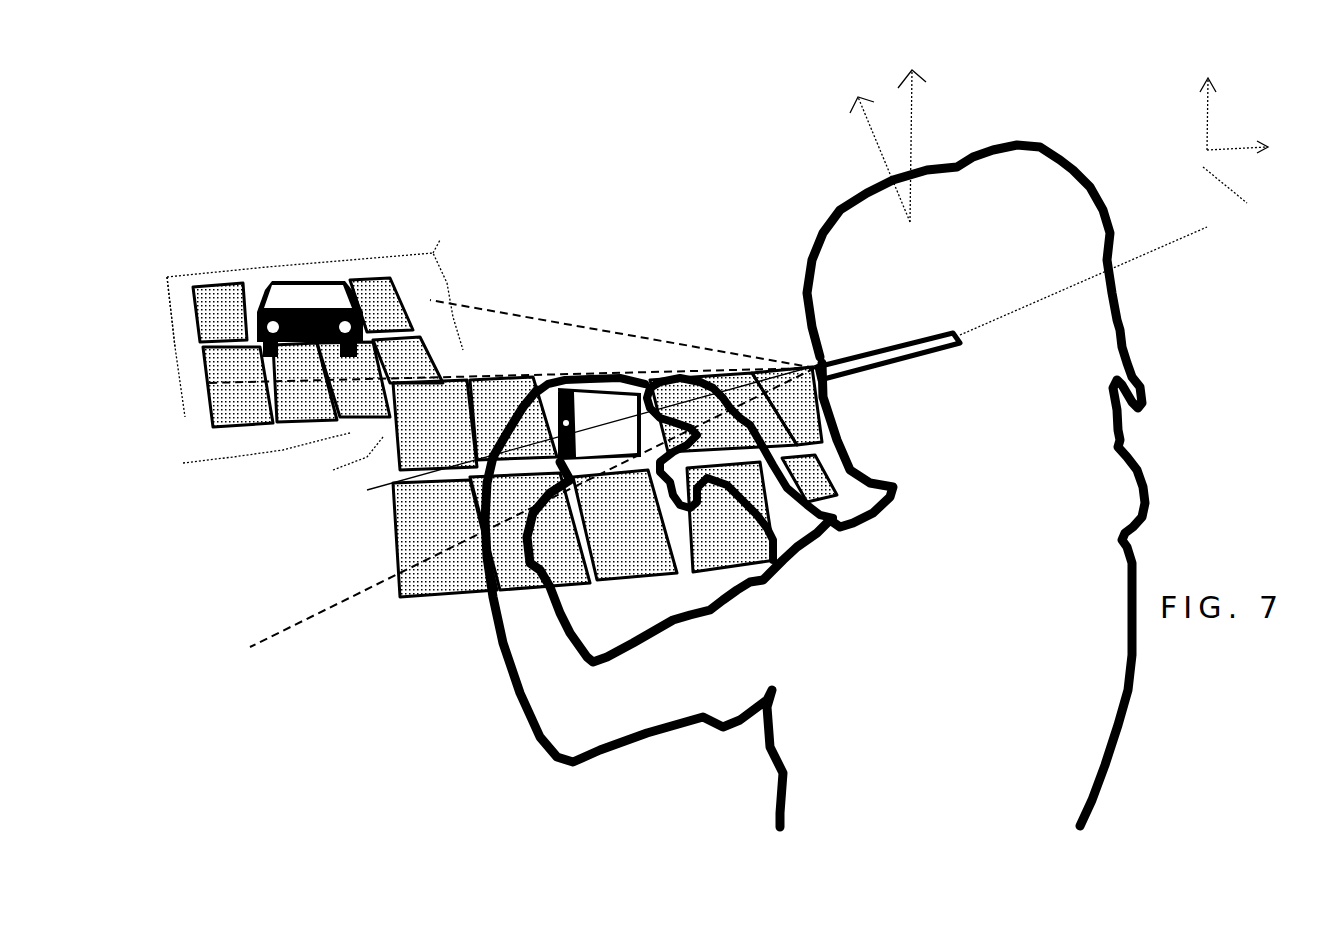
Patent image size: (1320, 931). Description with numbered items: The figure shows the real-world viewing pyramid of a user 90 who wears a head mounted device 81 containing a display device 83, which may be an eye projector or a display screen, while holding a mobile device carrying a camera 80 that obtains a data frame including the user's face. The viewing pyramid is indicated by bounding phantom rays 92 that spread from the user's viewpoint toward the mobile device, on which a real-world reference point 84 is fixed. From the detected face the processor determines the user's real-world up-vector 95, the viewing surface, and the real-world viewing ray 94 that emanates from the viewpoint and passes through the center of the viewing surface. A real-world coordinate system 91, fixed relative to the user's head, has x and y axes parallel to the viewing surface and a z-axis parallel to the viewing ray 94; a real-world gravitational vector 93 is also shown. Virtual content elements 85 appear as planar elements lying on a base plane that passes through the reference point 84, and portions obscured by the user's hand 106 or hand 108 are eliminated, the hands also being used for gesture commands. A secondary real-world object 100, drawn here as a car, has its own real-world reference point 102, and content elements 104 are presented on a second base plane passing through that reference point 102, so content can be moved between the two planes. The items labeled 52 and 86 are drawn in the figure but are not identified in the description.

The portable device (smartphone) 52 is at (587, 388).
The camera 80 is at (390, 470).
The head mounted device 81 is at (1083, 263).
The display device 83 is at (813, 353).
The real-world reference point 84 is at (527, 553).
The virtual content elements 85 is at (393, 517).
The line of sight to device 86 is at (575, 437).
The user 90 is at (1077, 390).
The real-world coordinate system 91 is at (1173, 113).
The bounding phantom rays 92 is at (607, 385).
The real-world gravitational vector 93 is at (935, 146).
The real-world viewing ray 94 is at (812, 357).
The real-world up-vector 95 is at (860, 123).
The secondary real-world object 100 is at (272, 272).
The real-world reference point 102 is at (374, 288).
The content elements 104 is at (197, 323).
The user's hand 106 is at (735, 462).
The user's hand 108 is at (552, 387).